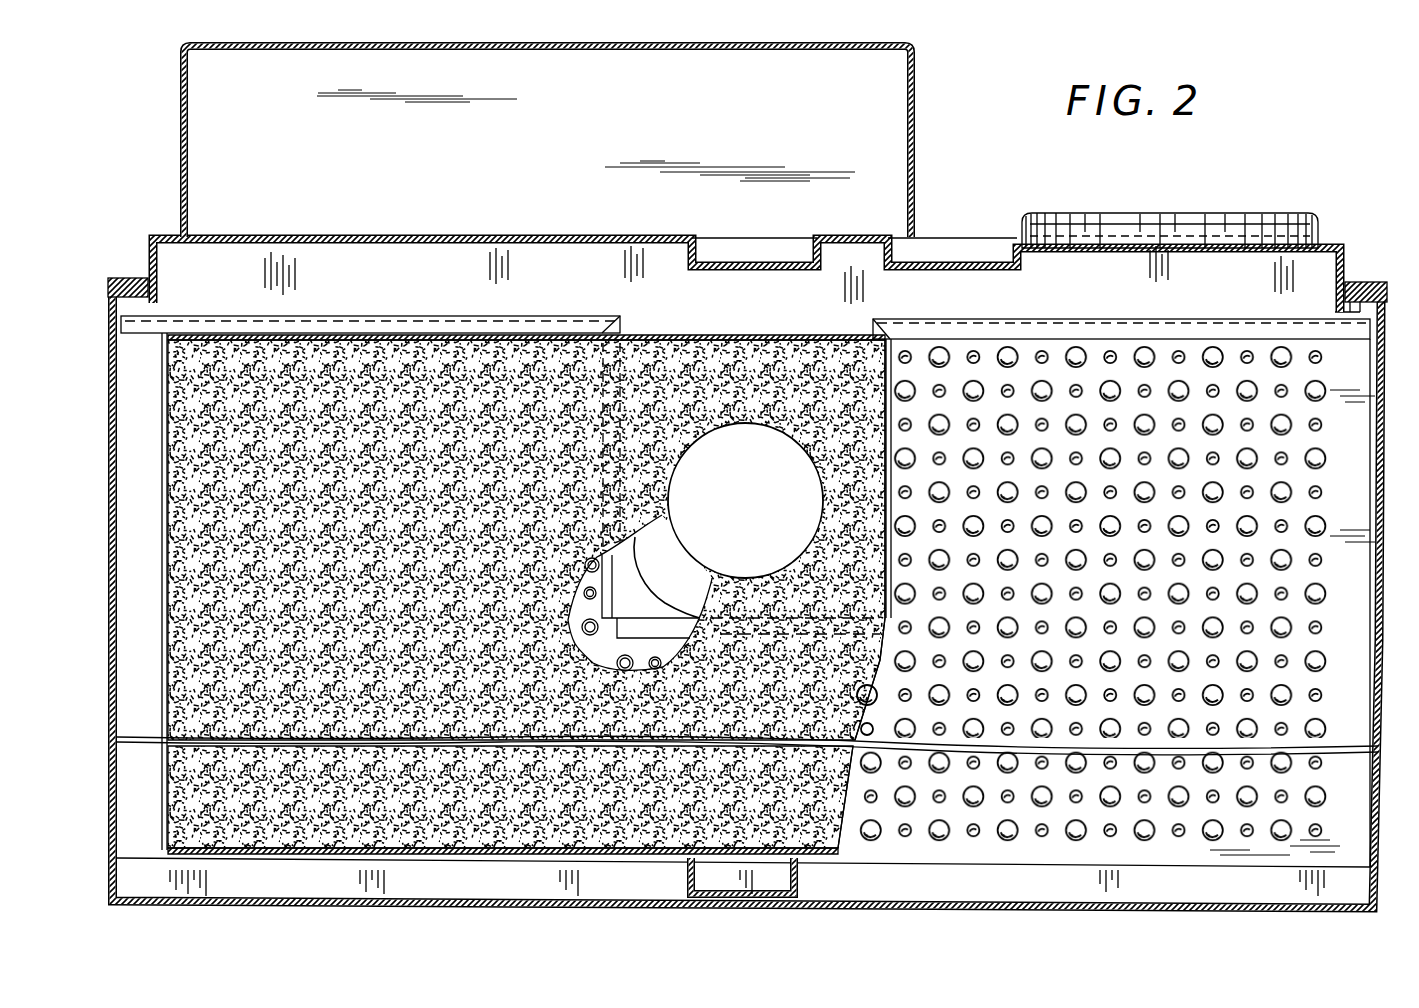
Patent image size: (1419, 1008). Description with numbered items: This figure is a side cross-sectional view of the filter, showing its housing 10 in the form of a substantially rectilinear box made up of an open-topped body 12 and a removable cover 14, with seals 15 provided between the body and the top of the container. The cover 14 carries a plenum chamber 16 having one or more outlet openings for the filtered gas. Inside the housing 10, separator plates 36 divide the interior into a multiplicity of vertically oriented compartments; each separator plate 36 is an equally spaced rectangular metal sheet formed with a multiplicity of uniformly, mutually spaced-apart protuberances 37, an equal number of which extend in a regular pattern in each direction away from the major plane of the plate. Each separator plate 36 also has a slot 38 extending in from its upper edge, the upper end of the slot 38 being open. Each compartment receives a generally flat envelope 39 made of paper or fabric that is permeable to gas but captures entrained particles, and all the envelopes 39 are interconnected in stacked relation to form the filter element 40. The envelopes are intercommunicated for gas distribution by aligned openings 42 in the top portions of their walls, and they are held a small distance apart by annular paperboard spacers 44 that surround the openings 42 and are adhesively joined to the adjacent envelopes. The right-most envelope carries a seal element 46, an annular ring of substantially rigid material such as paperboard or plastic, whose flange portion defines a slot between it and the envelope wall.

The housing 10 is at (763, 521).
The open-topped body 12 is at (1388, 476).
The removable cover 14 is at (964, 236).
The seals 15 is at (1387, 292).
The plenum chamber 16 is at (914, 97).
The separator plates 36 is at (446, 326).
The protuberances 37 is at (1178, 384).
The slot 38 is at (628, 331).
The envelope 39 is at (465, 497).
The filter element 40 is at (338, 328).
The openings 42 is at (721, 428).
The annular paperboard spacers 44 is at (686, 576).
The seal element 46 is at (668, 548).